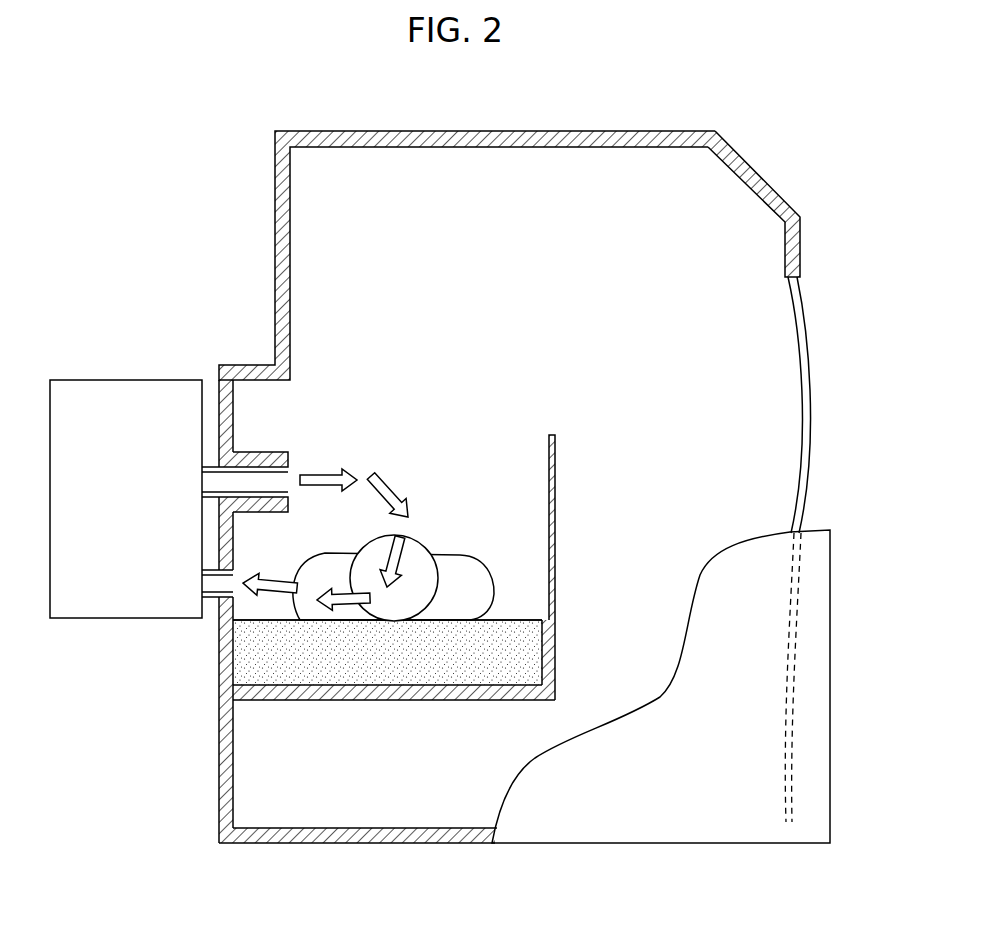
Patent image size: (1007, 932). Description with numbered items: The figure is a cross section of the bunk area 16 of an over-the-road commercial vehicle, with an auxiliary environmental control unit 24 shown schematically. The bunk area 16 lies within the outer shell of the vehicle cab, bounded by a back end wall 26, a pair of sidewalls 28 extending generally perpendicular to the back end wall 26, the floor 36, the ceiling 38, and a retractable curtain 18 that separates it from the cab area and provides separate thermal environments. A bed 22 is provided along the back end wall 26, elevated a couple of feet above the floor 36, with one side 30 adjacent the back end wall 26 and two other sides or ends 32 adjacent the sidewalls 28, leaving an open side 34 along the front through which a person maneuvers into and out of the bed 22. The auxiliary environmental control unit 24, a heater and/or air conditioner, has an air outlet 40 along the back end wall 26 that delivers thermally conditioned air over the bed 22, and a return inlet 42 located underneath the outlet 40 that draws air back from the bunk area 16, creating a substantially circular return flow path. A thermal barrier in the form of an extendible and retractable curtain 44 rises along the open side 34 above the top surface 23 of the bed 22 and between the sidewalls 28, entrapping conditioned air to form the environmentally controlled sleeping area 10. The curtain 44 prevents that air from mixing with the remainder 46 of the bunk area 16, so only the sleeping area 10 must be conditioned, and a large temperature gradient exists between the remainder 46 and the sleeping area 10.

The environmentally controlled sleeping area 10 is at (388, 412).
The bunk area 16 is at (608, 232).
The retractable curtain 18 is at (808, 440).
The bed 22 is at (327, 660).
The top surface 23 is at (512, 620).
The auxiliary environmental control unit 24 is at (120, 408).
The back end wall 26 is at (229, 805).
The sidewalls 28 is at (652, 813).
The side 30 is at (225, 665).
The sides or ends 32 is at (370, 692).
The open side 34 is at (557, 632).
The floor 36 is at (300, 844).
The ceiling 38 is at (543, 131).
The air outlet 40 is at (247, 477).
The return inlet 42 is at (225, 582).
The curtain 44 is at (556, 484).
The remainder 46 is at (698, 398).